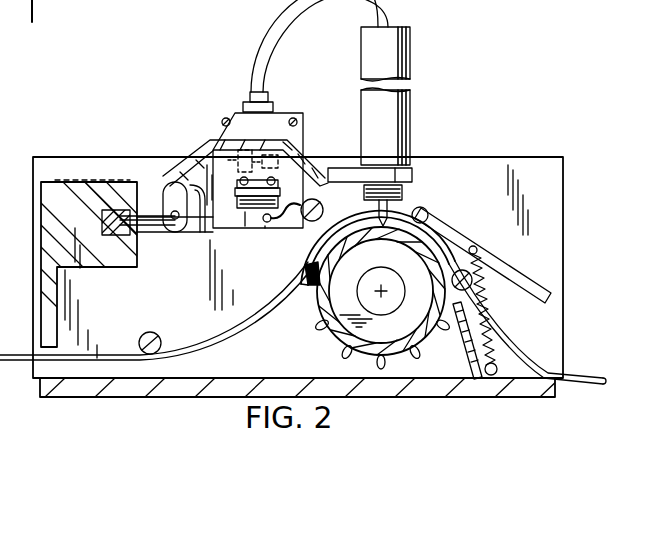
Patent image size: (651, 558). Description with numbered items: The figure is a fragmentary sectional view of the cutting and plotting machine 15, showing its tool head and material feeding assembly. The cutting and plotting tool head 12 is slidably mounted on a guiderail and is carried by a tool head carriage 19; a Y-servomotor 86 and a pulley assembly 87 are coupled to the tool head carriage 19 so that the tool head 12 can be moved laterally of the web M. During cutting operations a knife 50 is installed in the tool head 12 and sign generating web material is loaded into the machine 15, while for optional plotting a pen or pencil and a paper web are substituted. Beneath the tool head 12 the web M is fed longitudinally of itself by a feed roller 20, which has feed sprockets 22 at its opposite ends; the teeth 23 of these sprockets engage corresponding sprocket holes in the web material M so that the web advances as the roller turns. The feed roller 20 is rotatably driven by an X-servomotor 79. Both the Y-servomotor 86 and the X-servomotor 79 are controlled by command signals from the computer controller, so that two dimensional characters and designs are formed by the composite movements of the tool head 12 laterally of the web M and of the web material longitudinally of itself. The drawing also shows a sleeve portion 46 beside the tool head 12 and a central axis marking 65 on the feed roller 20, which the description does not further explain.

The cutting and plotting tool head 12 is at (351, 104).
The cutting and plotting machine 15 is at (562, 64).
The tool head carriage 19 is at (397, 177).
The feed roller 20 is at (370, 284).
The feed sprocket 22 is at (338, 333).
The teeth 23 is at (387, 358).
The motor sleeve 46 is at (411, 105).
The knife 50 is at (380, 222).
The wheel axis 65 is at (384, 295).
The X-servomotor 79 is at (385, 283).
The Y-servomotor 86 is at (285, 162).
The pulley assembly 87 is at (230, 160).
The web M is at (580, 376).